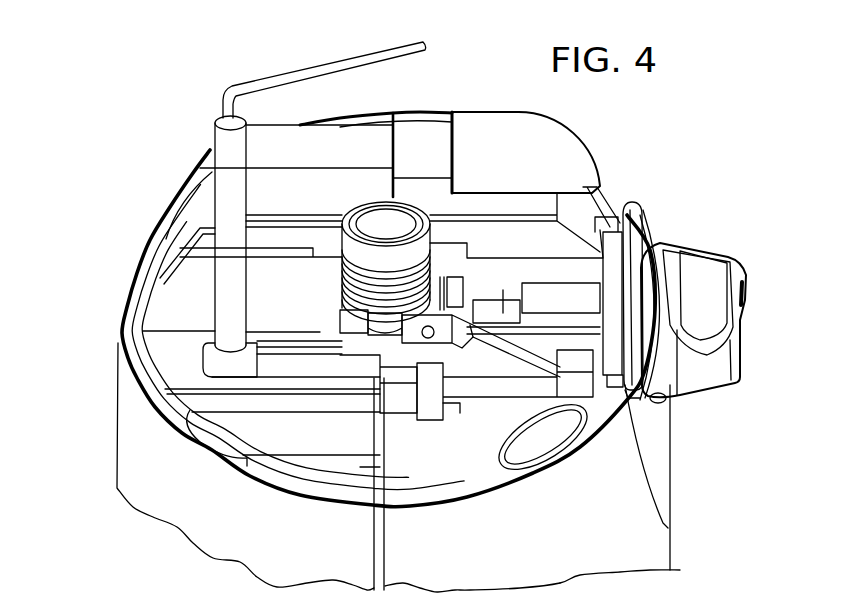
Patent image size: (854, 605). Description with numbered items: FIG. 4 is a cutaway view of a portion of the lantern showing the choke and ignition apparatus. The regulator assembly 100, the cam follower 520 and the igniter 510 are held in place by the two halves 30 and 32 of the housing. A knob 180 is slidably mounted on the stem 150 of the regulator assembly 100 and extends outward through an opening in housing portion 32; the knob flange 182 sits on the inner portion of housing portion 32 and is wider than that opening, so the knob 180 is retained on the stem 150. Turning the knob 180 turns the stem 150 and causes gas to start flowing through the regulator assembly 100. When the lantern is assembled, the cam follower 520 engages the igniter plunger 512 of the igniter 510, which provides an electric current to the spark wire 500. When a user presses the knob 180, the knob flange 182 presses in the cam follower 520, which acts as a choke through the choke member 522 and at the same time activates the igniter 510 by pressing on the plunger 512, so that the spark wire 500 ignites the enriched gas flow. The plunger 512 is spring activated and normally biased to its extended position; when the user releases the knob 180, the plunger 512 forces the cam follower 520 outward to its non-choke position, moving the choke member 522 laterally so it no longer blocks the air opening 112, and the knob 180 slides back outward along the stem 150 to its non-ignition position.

The housing half 30 is at (137, 467).
The housing portion 32 is at (643, 547).
The regulator assembly 100 is at (427, 207).
The air opening 112 is at (370, 327).
The stem 150 is at (503, 307).
The knob 180 is at (700, 262).
The knob flange 182 is at (643, 215).
The spark wire 500 is at (293, 77).
The igniter 510 is at (288, 367).
The igniter plunger 512 is at (430, 403).
The cam follower 520 is at (530, 390).
The choke member 522 is at (377, 360).